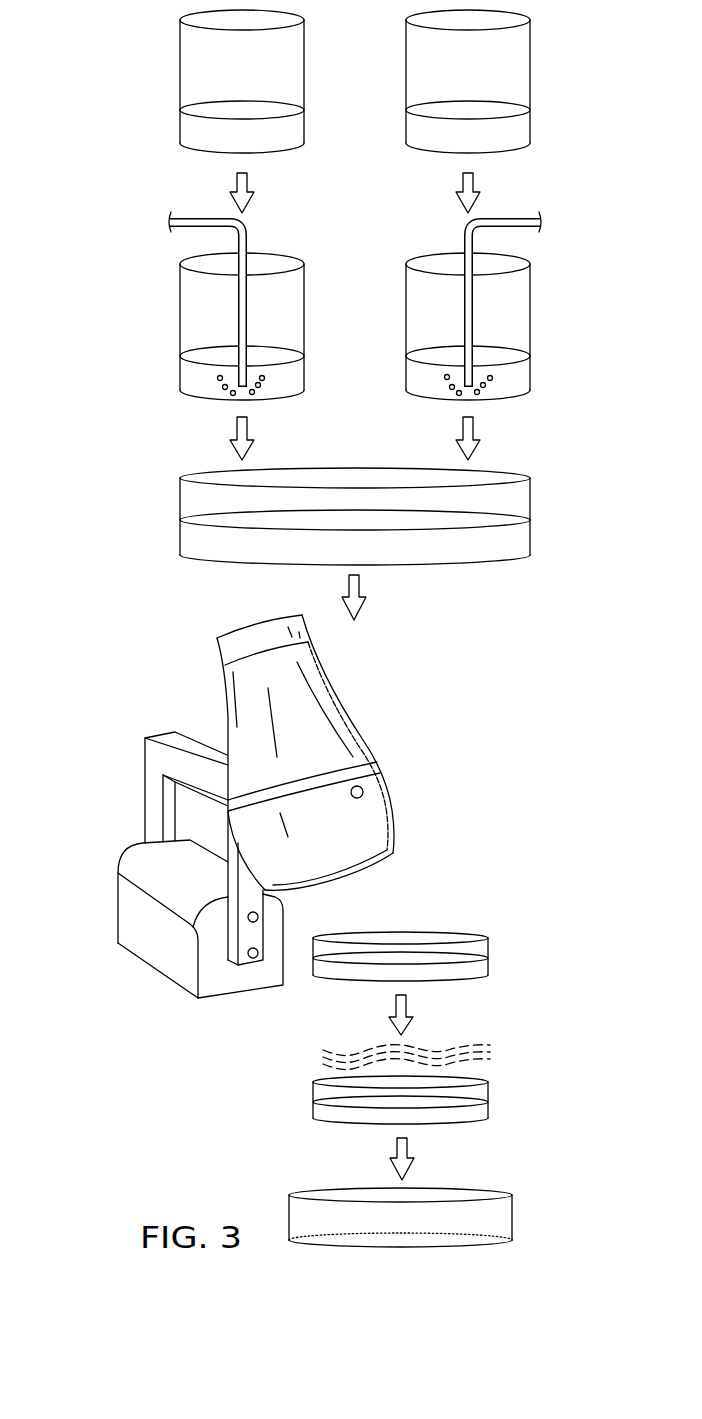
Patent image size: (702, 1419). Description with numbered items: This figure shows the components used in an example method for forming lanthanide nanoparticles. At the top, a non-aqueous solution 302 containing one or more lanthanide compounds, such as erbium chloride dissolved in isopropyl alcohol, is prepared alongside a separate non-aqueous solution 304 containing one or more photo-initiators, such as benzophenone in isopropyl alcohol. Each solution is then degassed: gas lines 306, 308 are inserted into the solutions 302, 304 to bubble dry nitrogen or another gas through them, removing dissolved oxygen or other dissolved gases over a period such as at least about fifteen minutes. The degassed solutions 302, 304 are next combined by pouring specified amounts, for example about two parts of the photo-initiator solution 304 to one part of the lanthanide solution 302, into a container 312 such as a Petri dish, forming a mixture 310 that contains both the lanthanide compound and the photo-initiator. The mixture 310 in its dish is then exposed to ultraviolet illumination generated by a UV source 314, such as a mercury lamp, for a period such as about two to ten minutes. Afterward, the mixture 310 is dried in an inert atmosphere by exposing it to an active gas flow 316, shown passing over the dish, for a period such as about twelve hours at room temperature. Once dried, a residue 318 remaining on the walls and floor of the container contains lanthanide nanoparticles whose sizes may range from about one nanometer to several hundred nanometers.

The non-aqueous solution containing lanthanide compound 302 is at (186, 125).
The non-aqueous solution containing photo-initiator 304 is at (522, 125).
The gas line 306 is at (197, 217).
The gas line 308 is at (511, 217).
The mixture 310 is at (188, 538).
The container 312 is at (178, 500).
The UV source 314 is at (118, 907).
The active gas flow 316 is at (313, 1058).
The residue 318 is at (420, 1250).